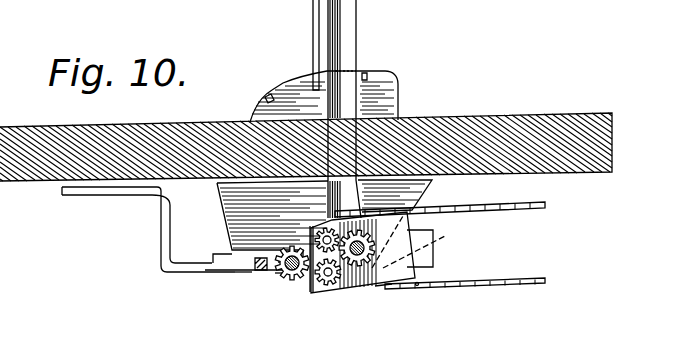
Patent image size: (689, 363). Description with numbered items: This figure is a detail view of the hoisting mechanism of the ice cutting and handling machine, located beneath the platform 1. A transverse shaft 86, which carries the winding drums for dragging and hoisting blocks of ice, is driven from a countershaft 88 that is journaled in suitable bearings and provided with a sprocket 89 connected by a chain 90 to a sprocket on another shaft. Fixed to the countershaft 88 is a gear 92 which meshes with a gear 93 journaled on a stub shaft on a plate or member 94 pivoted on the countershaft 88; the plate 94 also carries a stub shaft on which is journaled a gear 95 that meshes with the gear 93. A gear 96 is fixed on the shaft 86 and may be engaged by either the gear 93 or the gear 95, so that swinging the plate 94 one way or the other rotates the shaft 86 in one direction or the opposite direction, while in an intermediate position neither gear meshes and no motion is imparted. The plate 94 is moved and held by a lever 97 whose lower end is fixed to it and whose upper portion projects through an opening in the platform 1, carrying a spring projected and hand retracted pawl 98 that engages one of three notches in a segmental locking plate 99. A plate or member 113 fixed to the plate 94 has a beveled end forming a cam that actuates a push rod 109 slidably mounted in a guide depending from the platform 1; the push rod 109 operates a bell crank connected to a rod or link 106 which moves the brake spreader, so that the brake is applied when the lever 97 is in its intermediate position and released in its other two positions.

The platform 1 is at (196, 128).
The lever 97 is at (356, 18).
The pawl 98 is at (313, 20).
The segmental locking plate 99 is at (292, 92).
The gear 93 is at (302, 230).
The push rod 109 is at (250, 272).
The rod or link 106 is at (252, 270).
The gear 96 is at (278, 273).
The transverse shaft 86 is at (298, 279).
The gear 95 is at (324, 291).
The countershaft 88 is at (350, 291).
The gear 92 is at (383, 286).
The plate or member 94 is at (418, 285).
The sprocket 89 is at (433, 238).
The plate or member 113 is at (436, 265).
The chain 90 is at (512, 281).